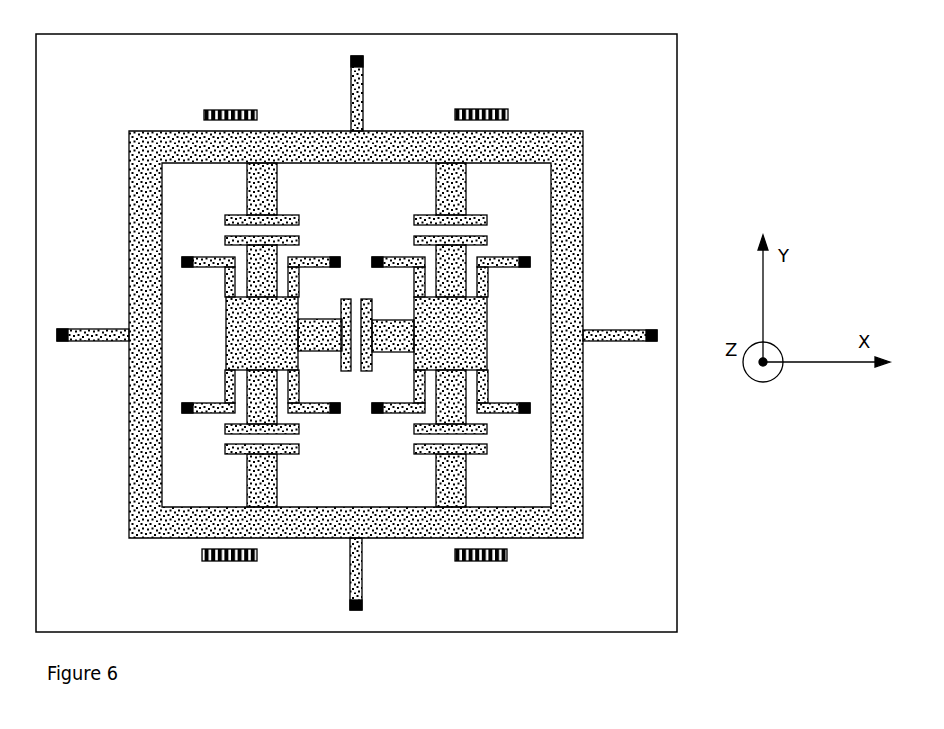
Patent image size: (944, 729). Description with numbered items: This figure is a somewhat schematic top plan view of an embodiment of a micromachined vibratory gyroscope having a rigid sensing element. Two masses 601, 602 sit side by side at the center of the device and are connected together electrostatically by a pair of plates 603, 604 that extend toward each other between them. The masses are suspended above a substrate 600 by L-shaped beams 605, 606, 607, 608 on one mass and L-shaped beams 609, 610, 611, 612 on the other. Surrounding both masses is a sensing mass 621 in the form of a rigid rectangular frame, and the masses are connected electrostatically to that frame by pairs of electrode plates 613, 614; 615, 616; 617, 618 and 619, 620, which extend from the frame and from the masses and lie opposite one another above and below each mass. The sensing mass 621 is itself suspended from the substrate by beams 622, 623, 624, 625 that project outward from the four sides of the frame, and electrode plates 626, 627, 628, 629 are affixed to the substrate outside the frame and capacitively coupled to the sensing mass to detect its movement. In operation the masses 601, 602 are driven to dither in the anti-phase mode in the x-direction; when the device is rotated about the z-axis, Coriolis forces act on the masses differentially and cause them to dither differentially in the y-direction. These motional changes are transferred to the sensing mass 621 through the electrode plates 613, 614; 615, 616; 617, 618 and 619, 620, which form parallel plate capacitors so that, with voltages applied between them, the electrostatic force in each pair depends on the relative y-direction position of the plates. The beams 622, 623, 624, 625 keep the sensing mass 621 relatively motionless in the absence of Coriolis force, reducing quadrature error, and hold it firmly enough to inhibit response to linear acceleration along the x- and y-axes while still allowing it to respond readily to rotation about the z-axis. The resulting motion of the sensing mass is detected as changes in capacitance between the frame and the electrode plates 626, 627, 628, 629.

The substrate 600 is at (356, 333).
The mass 601 is at (245, 329).
The mass 602 is at (477, 360).
The plate 603 is at (342, 350).
The plate 604 is at (373, 326).
The L-shaped beam 605 is at (225, 276).
The L-shaped beam 606 is at (299, 278).
The L-shaped beam 607 is at (225, 393).
The L-shaped beam 608 is at (305, 414).
The L-shaped beam 609 is at (412, 268).
The L-shaped beam 610 is at (490, 272).
The L-shaped beam 611 is at (400, 414).
The L-shaped beam 612 is at (488, 390).
The electrode plate 613 is at (226, 237).
The electrode plate 614 is at (297, 215).
The electrode plate 615 is at (225, 433).
The electrode plate 616 is at (298, 453).
The electrode plate 617 is at (487, 237).
The electrode plate 618 is at (415, 216).
The electrode plate 619 is at (487, 427).
The electrode plate 620 is at (414, 453).
The sensing mass 621 is at (572, 465).
The beam 622 is at (100, 329).
The beam 623 is at (363, 97).
The beam 624 is at (615, 330).
The beam 625 is at (361, 568).
The electrode plate 626 is at (245, 110).
The electrode plate 627 is at (500, 109).
The electrode plate 628 is at (485, 562).
The electrode plate 629 is at (235, 561).